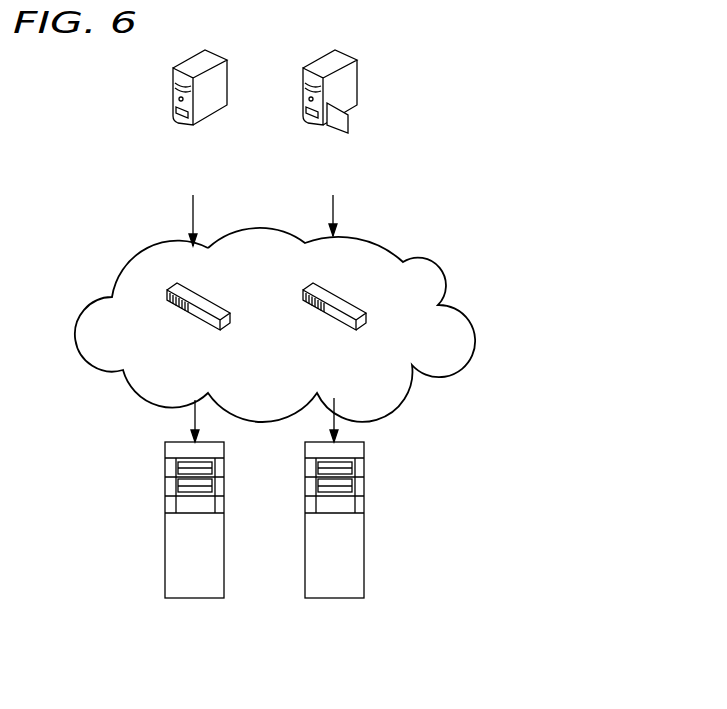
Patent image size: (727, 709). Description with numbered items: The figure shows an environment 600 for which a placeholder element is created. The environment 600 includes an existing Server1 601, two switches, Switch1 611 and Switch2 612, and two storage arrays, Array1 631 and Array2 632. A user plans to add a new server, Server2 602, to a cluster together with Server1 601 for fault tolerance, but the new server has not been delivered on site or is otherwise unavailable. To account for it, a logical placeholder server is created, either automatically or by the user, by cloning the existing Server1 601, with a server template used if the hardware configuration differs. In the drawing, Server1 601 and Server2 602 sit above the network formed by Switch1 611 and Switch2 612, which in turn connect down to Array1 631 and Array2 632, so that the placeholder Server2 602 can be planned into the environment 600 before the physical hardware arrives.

The environment 600 is at (93, 80).
The Server1 601 is at (214, 53).
The Server2 602 is at (344, 53).
The Switch1 611 is at (198, 298).
The Switch2 612 is at (334, 298).
The Array1 631 is at (165, 468).
The Array2 632 is at (363, 468).